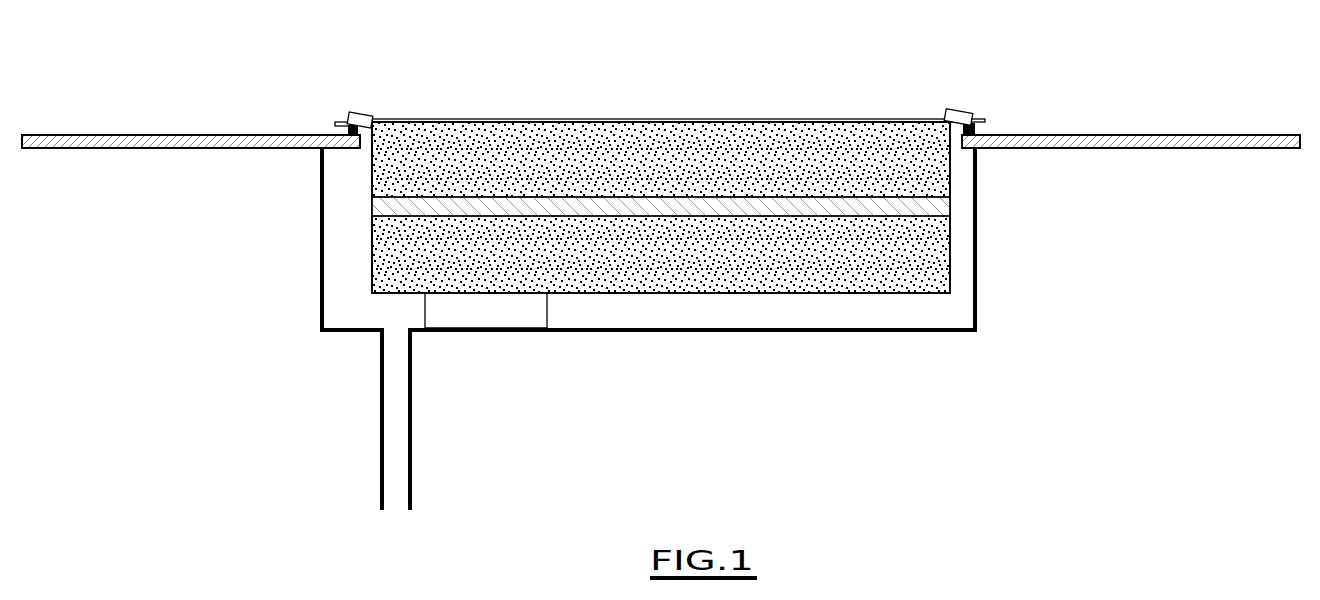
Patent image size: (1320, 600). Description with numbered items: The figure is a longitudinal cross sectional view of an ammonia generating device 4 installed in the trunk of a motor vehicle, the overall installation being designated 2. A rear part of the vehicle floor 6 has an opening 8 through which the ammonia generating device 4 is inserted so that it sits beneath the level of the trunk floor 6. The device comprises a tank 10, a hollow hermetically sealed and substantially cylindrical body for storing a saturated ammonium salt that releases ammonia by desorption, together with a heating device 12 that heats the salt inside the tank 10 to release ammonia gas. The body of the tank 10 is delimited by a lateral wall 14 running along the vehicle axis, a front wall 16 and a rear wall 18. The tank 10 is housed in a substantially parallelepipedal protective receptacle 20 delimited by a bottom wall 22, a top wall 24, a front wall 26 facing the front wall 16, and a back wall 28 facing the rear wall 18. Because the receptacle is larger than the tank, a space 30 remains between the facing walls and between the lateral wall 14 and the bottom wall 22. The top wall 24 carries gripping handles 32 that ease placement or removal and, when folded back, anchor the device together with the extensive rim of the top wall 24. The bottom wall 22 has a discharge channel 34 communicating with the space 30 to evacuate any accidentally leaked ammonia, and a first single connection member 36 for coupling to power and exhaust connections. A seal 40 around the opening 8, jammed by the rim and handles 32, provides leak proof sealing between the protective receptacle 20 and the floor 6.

The installation 2 is at (1149, 72).
The ammonia generating device 4 is at (1074, 314).
The floor 6 is at (1252, 134).
The opening 8 is at (328, 108).
The tank 10 is at (948, 238).
The heating device 12 is at (378, 208).
The lateral wall 14 is at (705, 293).
The front wall 16 is at (938, 182).
The rear wall 18 is at (372, 232).
The protective receptacle 20 is at (900, 332).
The bottom wall 22 is at (875, 331).
The top wall 24 is at (768, 120).
The front wall 26 is at (978, 296).
The back wall 28 is at (320, 292).
The space 30 is at (935, 315).
The gripping handles 32 is at (358, 114).
The discharge channel 34 is at (390, 506).
The first single connection member 36 is at (535, 313).
The seal 40 is at (980, 128).